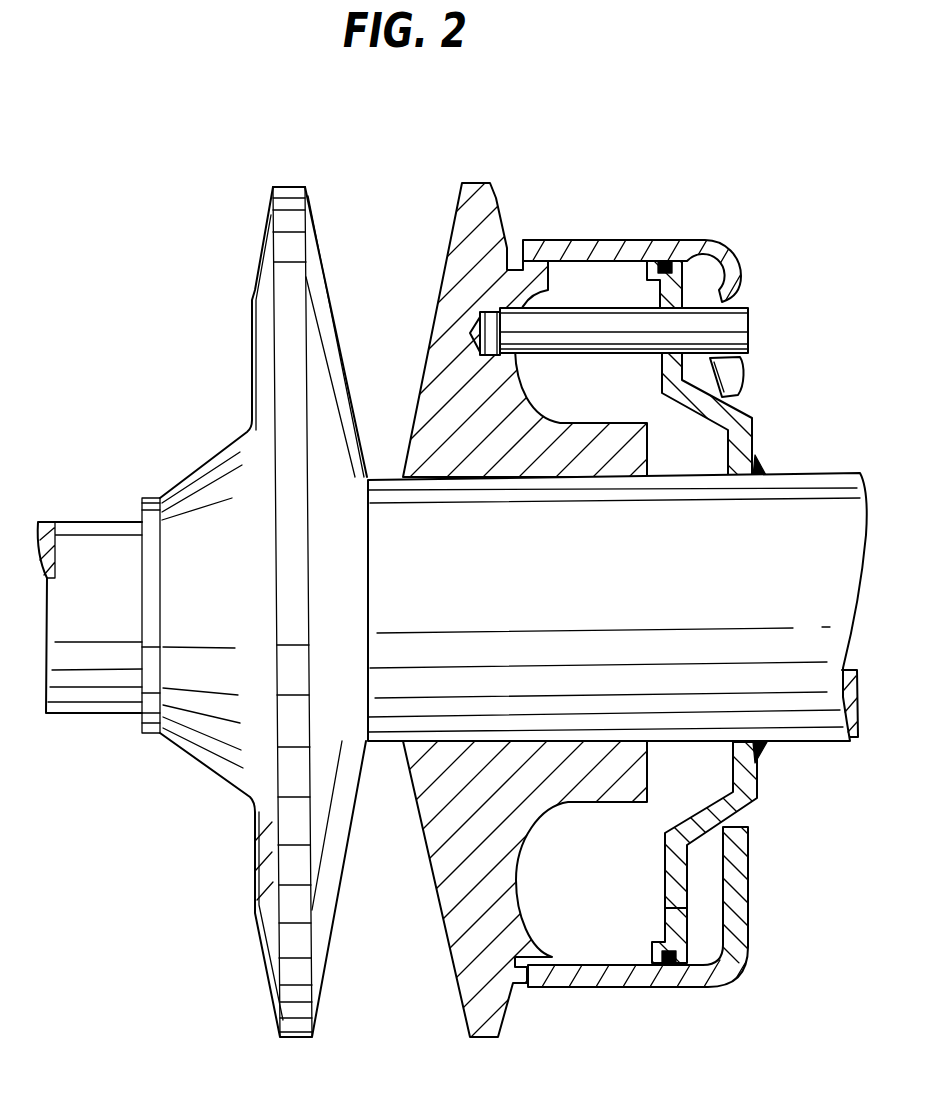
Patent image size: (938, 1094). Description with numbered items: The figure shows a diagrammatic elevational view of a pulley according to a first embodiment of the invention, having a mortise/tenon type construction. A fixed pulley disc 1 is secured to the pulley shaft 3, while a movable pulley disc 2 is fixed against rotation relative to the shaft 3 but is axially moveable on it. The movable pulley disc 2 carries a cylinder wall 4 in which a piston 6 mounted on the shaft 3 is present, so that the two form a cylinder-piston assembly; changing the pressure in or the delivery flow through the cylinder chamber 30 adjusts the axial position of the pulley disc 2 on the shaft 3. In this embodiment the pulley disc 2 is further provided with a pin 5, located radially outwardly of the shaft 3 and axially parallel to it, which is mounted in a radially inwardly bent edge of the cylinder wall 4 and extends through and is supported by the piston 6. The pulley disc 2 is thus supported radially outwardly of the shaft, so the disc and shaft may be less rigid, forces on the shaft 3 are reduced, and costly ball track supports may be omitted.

The pulley disc 1 is at (283, 186).
The pulley disc 2 is at (489, 192).
The pulley shaft 3 is at (857, 517).
The cylinder wall 4 is at (725, 254).
The pin 5 is at (748, 331).
The piston 6 is at (748, 451).
The cylinder chamber 30 is at (612, 393).